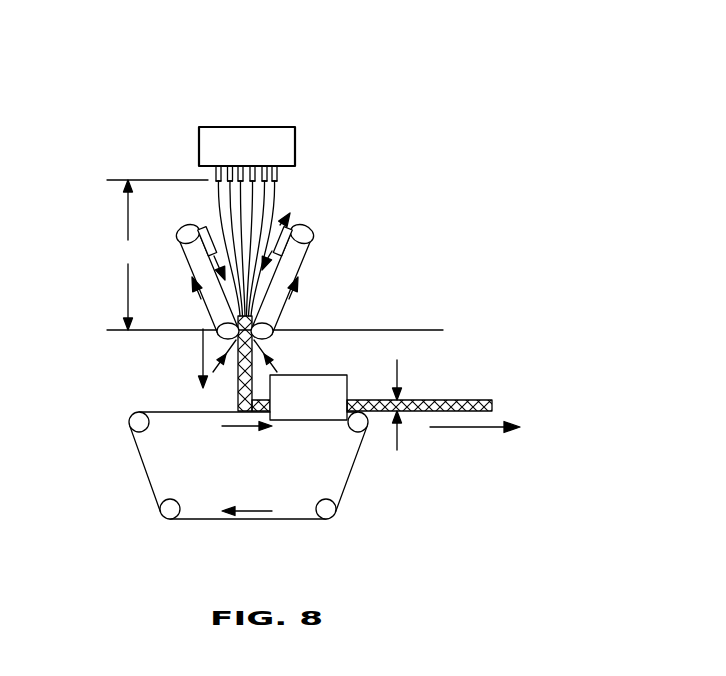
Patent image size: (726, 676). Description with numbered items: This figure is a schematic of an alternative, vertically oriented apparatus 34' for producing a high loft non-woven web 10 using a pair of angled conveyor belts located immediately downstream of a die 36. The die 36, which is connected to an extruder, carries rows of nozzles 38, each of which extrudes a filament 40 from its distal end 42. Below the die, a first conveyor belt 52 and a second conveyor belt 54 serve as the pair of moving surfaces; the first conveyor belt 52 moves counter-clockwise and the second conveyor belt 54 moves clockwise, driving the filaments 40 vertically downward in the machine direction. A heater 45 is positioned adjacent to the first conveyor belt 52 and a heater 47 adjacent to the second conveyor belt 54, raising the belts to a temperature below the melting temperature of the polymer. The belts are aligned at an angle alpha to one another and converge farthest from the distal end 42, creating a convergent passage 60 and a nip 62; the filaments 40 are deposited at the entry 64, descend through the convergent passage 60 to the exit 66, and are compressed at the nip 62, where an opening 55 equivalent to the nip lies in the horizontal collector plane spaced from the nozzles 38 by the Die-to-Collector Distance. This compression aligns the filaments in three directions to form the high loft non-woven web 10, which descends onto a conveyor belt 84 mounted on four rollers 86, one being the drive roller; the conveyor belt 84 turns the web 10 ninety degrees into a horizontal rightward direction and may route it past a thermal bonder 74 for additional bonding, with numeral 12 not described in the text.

The apparatus 34' is at (308, 298).
The die 36 is at (297, 142).
The nozzles 38 is at (296, 170).
The distal end 42 is at (279, 184).
The filament 40 is at (276, 216).
The entry 64 is at (203, 216).
The convergent passage 60 is at (294, 222).
The heater 47 is at (178, 249).
The heater 45 is at (314, 241).
The second conveyor belt 54 is at (188, 264).
The first conveyor belt 52 is at (328, 267).
The nip 62 is at (290, 318).
The opening 55 is at (218, 336).
The exit 66 is at (266, 341).
The thermal bonder 74 is at (348, 375).
The bonded web portion 12 is at (357, 400).
The high loft non-woven web 10 is at (238, 397).
The conveyor belt 84 is at (254, 484).
The rollers 86 is at (132, 428).